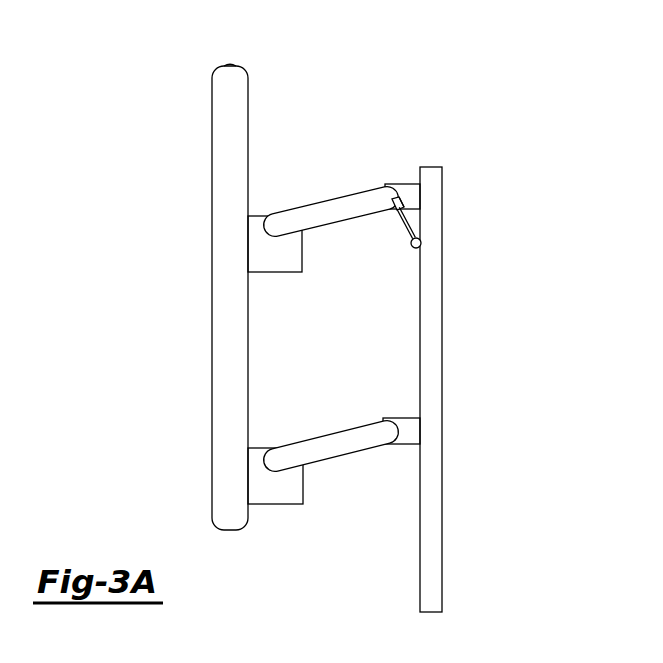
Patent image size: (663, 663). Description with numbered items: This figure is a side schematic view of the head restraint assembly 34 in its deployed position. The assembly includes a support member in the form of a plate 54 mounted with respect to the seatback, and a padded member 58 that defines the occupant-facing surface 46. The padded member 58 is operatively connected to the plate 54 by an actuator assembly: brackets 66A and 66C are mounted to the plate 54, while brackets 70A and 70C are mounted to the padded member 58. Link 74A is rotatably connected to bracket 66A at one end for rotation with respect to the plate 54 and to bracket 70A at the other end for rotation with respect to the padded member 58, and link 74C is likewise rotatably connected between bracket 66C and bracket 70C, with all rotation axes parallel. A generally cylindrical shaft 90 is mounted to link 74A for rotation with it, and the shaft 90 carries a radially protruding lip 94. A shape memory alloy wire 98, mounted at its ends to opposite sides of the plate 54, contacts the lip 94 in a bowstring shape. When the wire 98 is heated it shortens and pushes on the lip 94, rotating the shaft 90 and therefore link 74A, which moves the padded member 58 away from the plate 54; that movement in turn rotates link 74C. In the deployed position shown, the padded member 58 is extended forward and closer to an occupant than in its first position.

The head restraint assembly 34 is at (376, 59).
The surface 46 is at (212, 110).
The padded member 58 is at (229, 78).
The plate 54 is at (442, 284).
The bracket 70A is at (283, 258).
The bracket 70C is at (275, 495).
The bracket 66A is at (412, 195).
The bracket 66C is at (408, 432).
The link 74A is at (326, 203).
The link 74C is at (345, 453).
The shaft 90 is at (384, 186).
The lip 94 is at (405, 207).
The shape memory alloy wire 98 is at (400, 226).